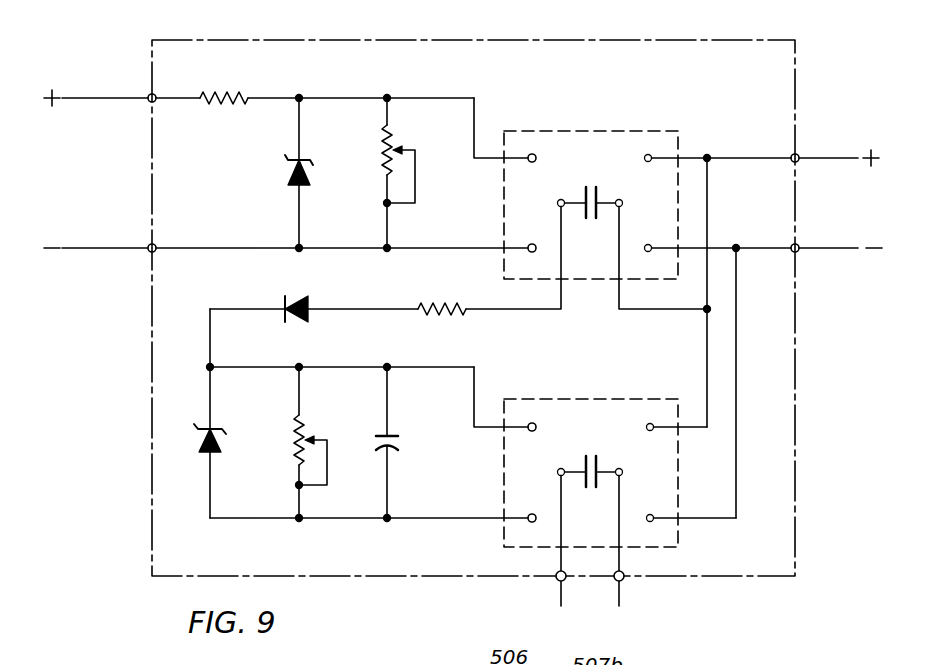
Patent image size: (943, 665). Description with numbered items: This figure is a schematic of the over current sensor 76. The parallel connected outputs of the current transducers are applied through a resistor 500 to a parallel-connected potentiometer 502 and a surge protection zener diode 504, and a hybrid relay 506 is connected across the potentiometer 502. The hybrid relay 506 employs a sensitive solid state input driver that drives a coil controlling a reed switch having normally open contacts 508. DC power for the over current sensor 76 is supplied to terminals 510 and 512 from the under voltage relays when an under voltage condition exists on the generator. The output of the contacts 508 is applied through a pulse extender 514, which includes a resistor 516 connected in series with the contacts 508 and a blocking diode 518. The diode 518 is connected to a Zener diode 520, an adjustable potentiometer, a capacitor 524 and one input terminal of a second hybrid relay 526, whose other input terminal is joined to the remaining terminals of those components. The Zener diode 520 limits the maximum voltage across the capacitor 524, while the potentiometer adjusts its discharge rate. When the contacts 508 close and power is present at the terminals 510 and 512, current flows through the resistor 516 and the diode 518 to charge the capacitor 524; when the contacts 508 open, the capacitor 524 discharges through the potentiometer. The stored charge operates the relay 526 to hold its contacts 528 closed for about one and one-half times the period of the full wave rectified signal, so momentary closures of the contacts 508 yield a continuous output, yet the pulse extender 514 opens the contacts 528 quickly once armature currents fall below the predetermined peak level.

The over current sensor 76 is at (515, 21).
The resistor 500 is at (250, 96).
The potentiometer 502 is at (383, 132).
The surge protection zenor diode 504 is at (290, 186).
The hybrid relay 506 is at (622, 131).
The normally open contacts 508 is at (590, 186).
The terminal 510 is at (798, 156).
The terminal 512 is at (798, 246).
The pulse extender 514 is at (522, 372).
The resistor 516 is at (459, 306).
The blocking diode 518 is at (310, 320).
The Zener diode 520 is at (195, 447).
The capacitor 524 is at (376, 446).
The second hybrid relay 526 is at (622, 399).
The relay contacts 528 is at (585, 467).